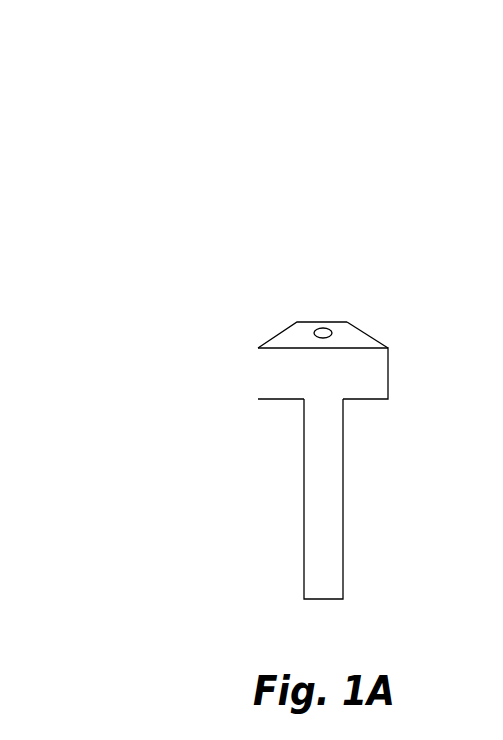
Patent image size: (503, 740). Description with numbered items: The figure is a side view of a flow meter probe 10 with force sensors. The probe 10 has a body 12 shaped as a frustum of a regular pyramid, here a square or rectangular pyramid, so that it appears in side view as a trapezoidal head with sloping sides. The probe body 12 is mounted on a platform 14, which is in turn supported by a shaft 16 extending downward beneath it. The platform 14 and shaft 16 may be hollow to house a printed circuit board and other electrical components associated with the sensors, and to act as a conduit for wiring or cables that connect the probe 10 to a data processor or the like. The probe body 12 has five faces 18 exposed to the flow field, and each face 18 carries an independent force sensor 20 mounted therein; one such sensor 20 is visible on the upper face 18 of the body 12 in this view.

The flow meter probe 10 is at (220, 160).
The probe body 12 is at (363, 332).
The platform 14 is at (389, 375).
The shaft 16 is at (343, 499).
The face 18 is at (293, 336).
The force sensor 20 is at (324, 329).